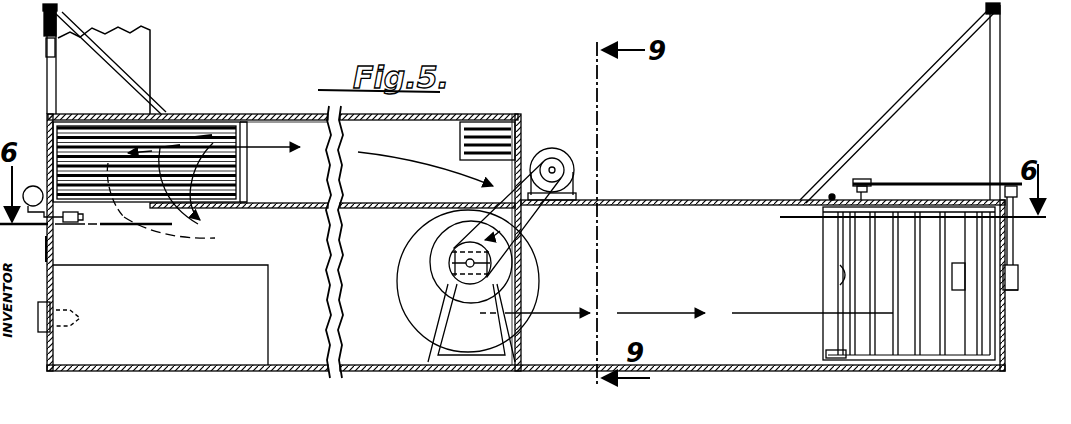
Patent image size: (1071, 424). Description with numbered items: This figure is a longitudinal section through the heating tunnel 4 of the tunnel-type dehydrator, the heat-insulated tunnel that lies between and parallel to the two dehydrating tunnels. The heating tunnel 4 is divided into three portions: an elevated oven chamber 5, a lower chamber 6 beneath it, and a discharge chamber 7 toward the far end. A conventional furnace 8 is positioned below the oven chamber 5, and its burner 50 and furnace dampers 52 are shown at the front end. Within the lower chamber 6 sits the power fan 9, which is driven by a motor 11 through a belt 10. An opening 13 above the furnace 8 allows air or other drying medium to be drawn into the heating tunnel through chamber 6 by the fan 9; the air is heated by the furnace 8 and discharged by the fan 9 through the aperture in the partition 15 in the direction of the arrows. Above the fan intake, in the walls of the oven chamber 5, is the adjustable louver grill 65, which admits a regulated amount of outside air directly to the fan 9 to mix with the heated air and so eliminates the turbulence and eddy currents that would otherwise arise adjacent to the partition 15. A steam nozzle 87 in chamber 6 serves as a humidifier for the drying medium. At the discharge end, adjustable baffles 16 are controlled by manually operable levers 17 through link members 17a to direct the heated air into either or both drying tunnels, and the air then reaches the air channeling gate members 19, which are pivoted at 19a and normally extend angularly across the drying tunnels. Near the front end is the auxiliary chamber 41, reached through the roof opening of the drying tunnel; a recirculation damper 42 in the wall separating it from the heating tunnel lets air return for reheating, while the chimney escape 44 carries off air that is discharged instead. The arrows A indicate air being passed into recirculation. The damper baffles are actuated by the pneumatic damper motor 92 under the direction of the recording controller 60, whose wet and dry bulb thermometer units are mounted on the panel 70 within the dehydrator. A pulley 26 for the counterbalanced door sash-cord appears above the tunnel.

The heating tunnel 4 is at (690, 276).
The elevated oven chamber 5 is at (270, 179).
The lower chamber 6 is at (312, 282).
The discharge chamber 7 is at (735, 232).
The furnace 8 is at (164, 324).
The power fan 9 is at (420, 258).
The belt 10 is at (540, 222).
The motor 11 is at (556, 150).
The opening 13 is at (50, 132).
The partition 15 is at (522, 282).
The adjustable baffles 16 is at (930, 250).
The manually operable levers 17 is at (1034, 278).
The link members 17a is at (943, 183).
The air channeling gate members 19 is at (845, 352).
The pivot 19a is at (836, 198).
The pulley 26 is at (45, 40).
The auxiliary chamber 41 is at (212, 132).
The recirculation damper 42 is at (172, 135).
The chimney escape 44 is at (140, 52).
The burner 50 is at (48, 302).
The furnace dampers 52 is at (46, 253).
The recording controller 60 is at (1015, 290).
The adjustable louver grill 65 is at (503, 122).
The panel 70 is at (957, 292).
The steam nozzle 87 is at (74, 224).
The damper motor 92 is at (33, 186).
The arrows A is at (161, 190).